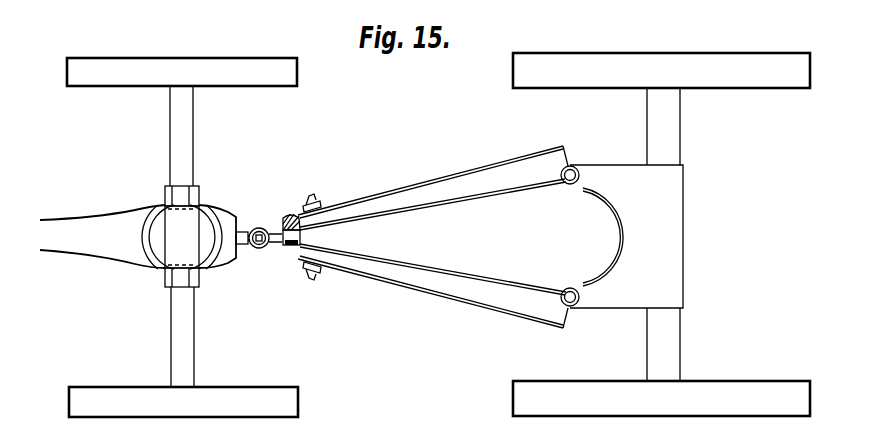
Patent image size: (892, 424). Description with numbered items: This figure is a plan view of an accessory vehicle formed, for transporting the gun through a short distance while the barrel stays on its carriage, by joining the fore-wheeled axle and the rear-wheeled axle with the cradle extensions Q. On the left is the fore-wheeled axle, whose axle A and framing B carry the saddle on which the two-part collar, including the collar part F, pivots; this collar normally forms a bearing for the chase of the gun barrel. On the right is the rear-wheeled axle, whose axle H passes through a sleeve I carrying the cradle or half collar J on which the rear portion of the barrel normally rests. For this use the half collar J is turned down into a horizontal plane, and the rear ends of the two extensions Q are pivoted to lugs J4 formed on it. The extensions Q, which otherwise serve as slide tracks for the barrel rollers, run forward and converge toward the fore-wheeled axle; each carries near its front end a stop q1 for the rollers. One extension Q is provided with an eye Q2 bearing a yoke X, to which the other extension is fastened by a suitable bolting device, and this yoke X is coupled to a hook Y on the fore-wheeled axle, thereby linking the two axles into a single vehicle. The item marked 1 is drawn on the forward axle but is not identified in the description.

The front axle 1 is at (183, 143).
The axle A is at (183, 351).
The framing B is at (122, 215).
The collar part F is at (177, 247).
The yoke X is at (277, 230).
The hook Y is at (249, 248).
The extensions Q is at (422, 190).
The eye Q2 is at (290, 214).
The stop q1 is at (313, 200).
The cradle or half collar J is at (627, 233).
The lugs J4 is at (584, 172).
The sleeve I is at (677, 272).
The axle H is at (667, 130).